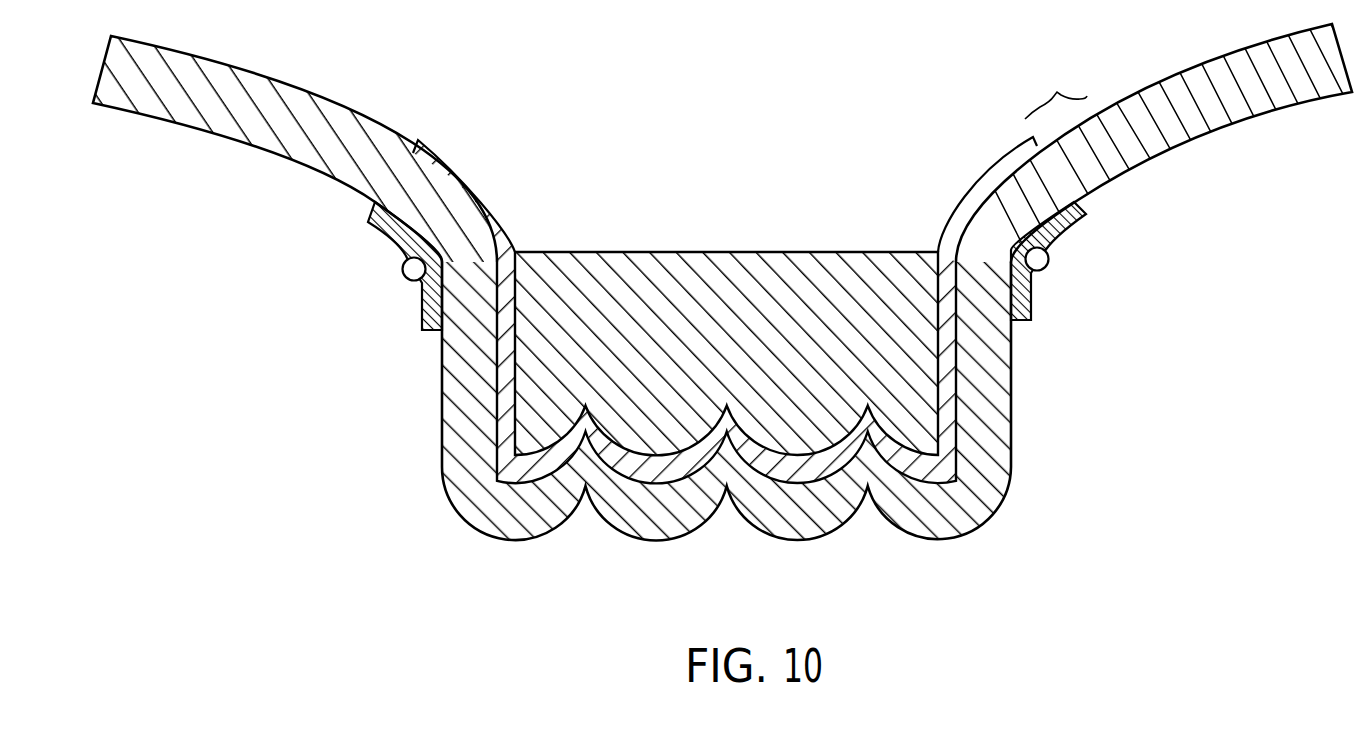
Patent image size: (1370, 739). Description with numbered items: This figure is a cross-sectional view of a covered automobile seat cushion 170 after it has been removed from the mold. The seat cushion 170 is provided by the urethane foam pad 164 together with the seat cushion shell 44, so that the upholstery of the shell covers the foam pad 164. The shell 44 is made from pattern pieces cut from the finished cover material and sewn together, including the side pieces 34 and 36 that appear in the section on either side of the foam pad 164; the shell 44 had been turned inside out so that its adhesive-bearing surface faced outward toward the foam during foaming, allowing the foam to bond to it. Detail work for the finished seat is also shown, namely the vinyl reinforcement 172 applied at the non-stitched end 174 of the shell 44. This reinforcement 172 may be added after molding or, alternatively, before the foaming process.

The side piece 34 is at (442, 423).
The side piece 36 is at (1014, 411).
The seat cushion shell 44 is at (1056, 94).
The urethane foam pad 164 is at (866, 251).
The seat cushion 170 is at (730, 326).
The vinyl reinforcement 172 is at (1033, 300).
The non-stitched end 174 is at (960, 122).